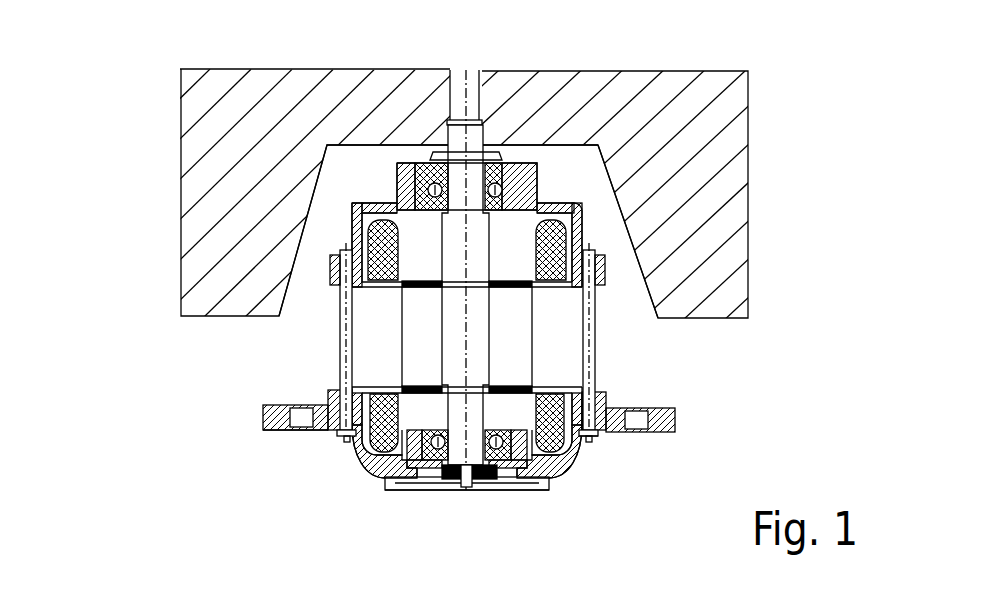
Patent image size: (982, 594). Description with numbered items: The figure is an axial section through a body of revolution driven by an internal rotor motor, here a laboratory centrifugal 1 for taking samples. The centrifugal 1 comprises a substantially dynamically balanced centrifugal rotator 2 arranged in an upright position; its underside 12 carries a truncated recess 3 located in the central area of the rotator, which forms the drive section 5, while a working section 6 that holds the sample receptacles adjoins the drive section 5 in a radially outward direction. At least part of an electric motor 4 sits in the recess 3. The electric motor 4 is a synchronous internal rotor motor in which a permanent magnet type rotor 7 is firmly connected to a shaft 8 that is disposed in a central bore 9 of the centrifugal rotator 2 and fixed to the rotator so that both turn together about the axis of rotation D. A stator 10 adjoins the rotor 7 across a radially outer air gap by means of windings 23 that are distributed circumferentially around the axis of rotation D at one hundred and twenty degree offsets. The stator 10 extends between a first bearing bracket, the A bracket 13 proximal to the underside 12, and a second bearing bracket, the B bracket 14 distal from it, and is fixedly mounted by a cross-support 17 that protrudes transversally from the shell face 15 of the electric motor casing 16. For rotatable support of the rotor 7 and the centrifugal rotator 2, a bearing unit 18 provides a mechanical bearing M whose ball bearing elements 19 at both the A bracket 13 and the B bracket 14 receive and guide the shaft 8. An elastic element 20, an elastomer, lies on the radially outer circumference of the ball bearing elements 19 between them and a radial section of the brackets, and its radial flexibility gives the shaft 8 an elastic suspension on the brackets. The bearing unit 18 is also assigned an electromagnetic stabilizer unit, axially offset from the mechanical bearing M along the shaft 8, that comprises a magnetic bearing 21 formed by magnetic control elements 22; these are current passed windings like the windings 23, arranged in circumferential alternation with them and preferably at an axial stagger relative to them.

The laboratory centrifugal 1 is at (160, 375).
The centrifugal rotator 2 is at (737, 220).
The truncated recess 3 is at (288, 292).
The electric motor 4 is at (232, 472).
The drive section 5 is at (543, 60).
The working section 6 is at (155, 108).
The rotor 7 is at (520, 370).
The shaft 8 is at (480, 340).
The central bore 9 is at (445, 92).
The stator 10 is at (589, 442).
The underside 12 is at (745, 350).
The A bracket 13 is at (558, 202).
The B bracket 14 is at (556, 481).
The shell face 15 is at (592, 355).
The electric motor casing 16 is at (559, 245).
The cross-support 17 is at (262, 410).
The bearing unit 18 is at (386, 500).
The ball bearing elements 19 is at (513, 483).
The elastic element 20 is at (400, 183).
The magnetic bearing 21 is at (318, 376).
The magnetic control elements 22 is at (312, 336).
The windings 23 is at (312, 353).
The axis of rotation D is at (476, 95).
The mechanical bearing M is at (550, 163).